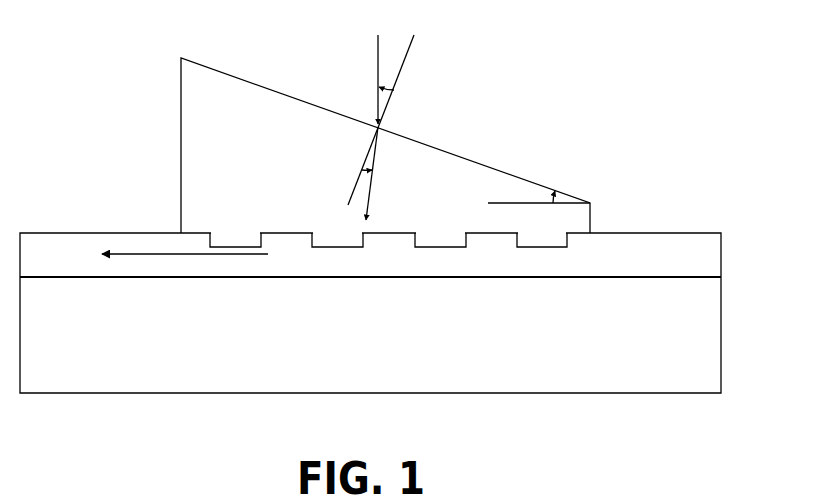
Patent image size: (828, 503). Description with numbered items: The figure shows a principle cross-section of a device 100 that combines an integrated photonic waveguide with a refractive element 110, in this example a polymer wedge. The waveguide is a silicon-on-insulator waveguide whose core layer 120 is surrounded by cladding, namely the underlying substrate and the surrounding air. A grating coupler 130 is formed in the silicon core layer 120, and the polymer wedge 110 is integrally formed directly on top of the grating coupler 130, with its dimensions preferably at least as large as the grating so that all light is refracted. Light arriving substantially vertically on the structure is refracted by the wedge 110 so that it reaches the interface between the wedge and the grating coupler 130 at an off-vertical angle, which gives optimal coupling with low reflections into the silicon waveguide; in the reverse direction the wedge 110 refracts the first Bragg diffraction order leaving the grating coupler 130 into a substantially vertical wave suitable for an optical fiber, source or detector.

The device 100 is at (102, 95).
The refractive element 110 is at (270, 117).
The core layer 120 is at (71, 241).
The grating coupler 130 is at (566, 241).